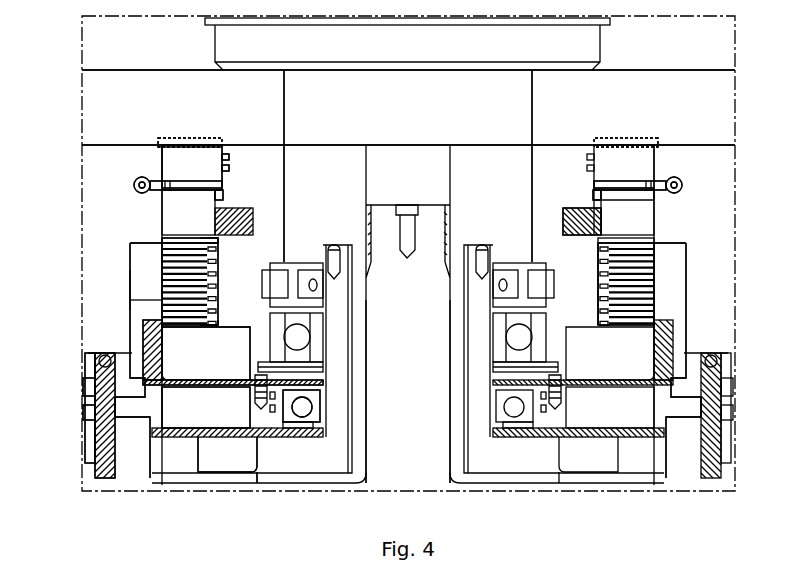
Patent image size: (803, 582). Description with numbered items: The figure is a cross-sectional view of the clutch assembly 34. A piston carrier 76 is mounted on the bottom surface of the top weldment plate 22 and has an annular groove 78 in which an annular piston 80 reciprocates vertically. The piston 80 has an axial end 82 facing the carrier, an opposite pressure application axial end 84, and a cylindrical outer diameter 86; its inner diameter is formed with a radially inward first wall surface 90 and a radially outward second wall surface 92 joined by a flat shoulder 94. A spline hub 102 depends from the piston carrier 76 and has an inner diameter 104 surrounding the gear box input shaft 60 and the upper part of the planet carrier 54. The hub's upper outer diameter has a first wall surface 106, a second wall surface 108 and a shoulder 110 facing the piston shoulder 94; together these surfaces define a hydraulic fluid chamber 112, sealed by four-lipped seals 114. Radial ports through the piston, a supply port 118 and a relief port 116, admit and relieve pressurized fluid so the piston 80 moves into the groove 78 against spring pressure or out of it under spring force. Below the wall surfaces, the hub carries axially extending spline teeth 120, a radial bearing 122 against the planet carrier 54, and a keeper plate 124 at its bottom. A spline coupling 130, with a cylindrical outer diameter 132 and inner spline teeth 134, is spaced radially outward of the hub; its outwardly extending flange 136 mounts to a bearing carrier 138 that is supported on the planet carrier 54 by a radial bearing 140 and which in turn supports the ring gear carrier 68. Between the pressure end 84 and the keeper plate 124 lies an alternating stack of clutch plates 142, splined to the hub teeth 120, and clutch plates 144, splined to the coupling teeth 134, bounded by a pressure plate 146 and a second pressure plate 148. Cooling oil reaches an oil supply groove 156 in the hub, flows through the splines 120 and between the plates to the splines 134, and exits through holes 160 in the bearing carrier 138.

The top weldment plate 22 is at (134, 52).
The piston carrier 76 is at (131, 107).
The annular groove 78 is at (205, 140).
The axial end 82 is at (157, 153).
The piston 80 is at (182, 173).
The seals 114 is at (230, 167).
The hydraulic fluid chamber 112 is at (222, 188).
The spline hub 102 is at (245, 185).
The supply port 118 is at (138, 189).
The pressure application axial end 84 is at (160, 244).
The spline coupling 130 is at (143, 270).
The outer diameter 132 is at (130, 292).
The spline teeth 134 is at (150, 300).
The spline teeth 120 is at (212, 268).
The pressure plate 146 is at (225, 243).
The second pressure plate 148 is at (210, 323).
The radial bearing 122 is at (265, 330).
The keeper plate 124 is at (180, 362).
The outwardly extending flange 136 is at (88, 383).
The bearing carrier 138 is at (82, 410).
The ring gear carrier 68 is at (82, 435).
The holes 160 is at (175, 415).
The planet carrier 54 is at (228, 460).
The radial bearing 140 is at (303, 410).
The inner diameter 104 is at (391, 180).
The gear box input shaft 60 is at (408, 391).
The first wall surface 90 is at (597, 156).
The first wall surface 106 is at (600, 148).
The shoulder 110 is at (605, 182).
The relief port 116 is at (683, 184).
The outer diameter 86 is at (655, 198).
The second wall surface 92 is at (560, 211).
The clutch assembly 34 is at (697, 239).
The clutch plates 142 is at (655, 274).
The clutch plates 144 is at (605, 297).
The shoulder 94 is at (596, 193).
The second wall surface 108 is at (600, 224).
The oil supply groove 156 is at (582, 232).